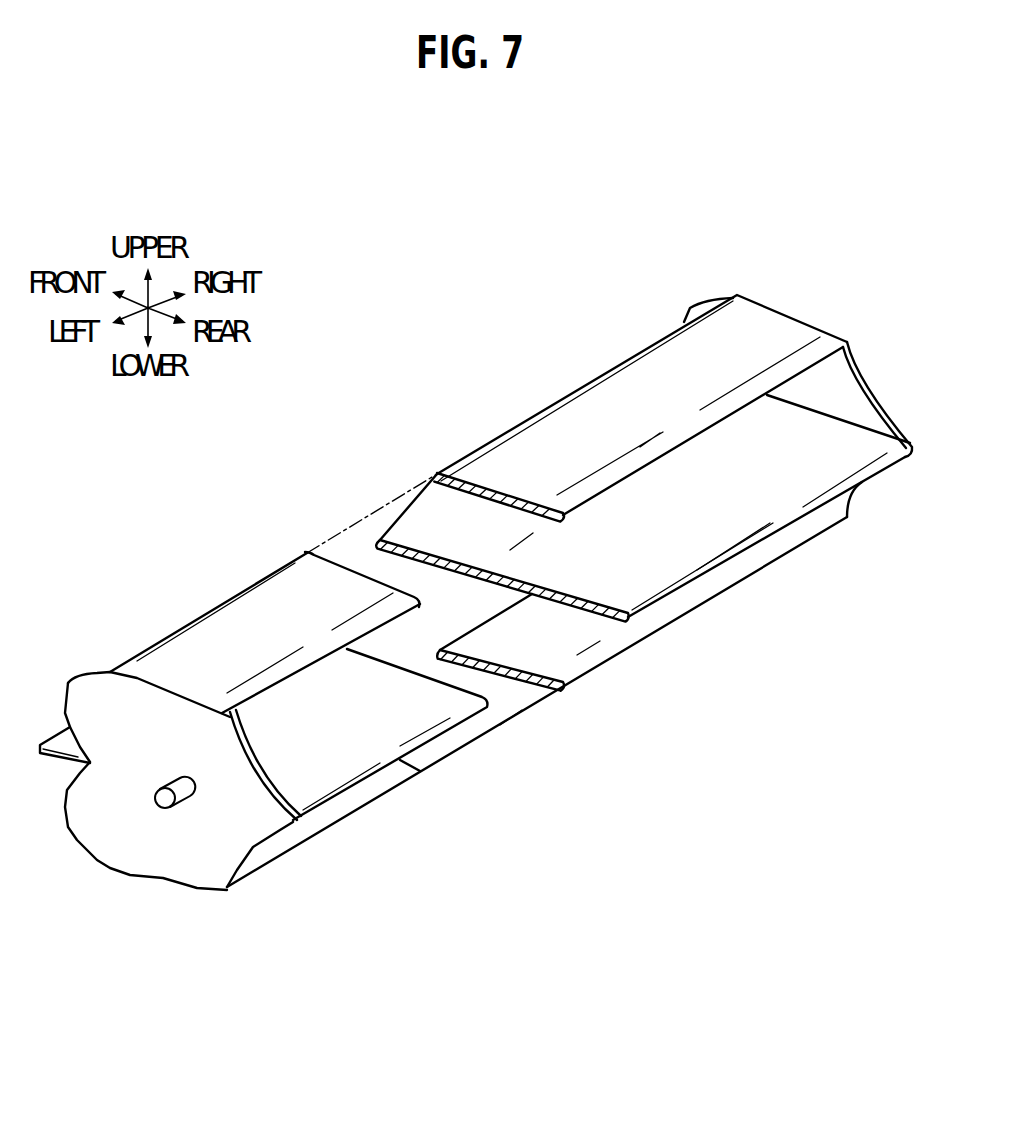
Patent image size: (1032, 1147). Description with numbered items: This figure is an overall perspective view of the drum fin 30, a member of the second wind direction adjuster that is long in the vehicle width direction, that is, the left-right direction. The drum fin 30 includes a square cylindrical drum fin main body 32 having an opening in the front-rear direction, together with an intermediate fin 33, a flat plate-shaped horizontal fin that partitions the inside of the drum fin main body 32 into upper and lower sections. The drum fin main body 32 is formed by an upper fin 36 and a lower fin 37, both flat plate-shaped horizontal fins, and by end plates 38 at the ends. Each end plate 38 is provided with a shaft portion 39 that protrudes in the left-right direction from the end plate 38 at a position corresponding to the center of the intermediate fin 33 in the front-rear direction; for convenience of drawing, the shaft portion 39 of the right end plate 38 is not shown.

The drum fin 30 is at (486, 326).
The drum fin main body 32 is at (873, 390).
The intermediate fin 33 is at (843, 457).
The upper fin 36 is at (500, 467).
The lower fin 37 is at (580, 667).
The end plate 38 is at (127, 727).
The shaft portion 39 is at (167, 798).